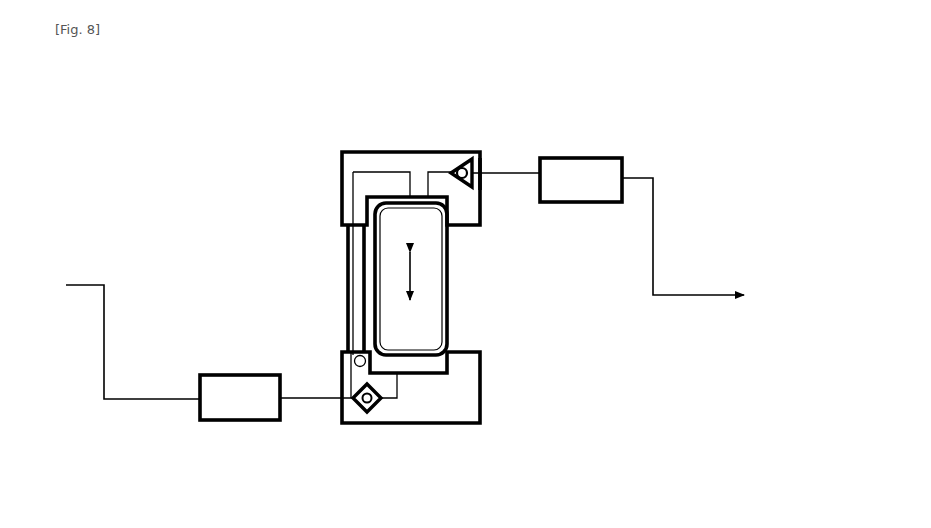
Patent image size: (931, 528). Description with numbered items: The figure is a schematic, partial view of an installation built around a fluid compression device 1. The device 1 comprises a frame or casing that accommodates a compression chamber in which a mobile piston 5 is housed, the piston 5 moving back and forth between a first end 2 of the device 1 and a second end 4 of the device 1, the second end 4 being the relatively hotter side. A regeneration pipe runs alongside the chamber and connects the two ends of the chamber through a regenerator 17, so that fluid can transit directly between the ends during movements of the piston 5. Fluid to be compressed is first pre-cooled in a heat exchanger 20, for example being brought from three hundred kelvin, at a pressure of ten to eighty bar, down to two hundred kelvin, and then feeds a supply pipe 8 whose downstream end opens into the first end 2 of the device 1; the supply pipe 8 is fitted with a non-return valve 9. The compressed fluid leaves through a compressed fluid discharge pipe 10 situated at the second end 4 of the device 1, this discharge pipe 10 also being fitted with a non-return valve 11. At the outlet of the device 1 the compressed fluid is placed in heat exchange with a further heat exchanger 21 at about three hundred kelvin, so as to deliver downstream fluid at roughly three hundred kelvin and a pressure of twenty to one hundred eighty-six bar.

The fluid compression device 1 is at (405, 293).
The first end 2 is at (460, 395).
The second end 4 is at (432, 150).
The mobile piston 5 is at (402, 238).
The supply pipe 8 is at (386, 400).
The non-return valve 9 is at (348, 405).
The compressed fluid discharge pipe 10 is at (441, 172).
The non-return valve 11 is at (486, 156).
The regenerator 17 is at (355, 248).
The heat exchanger 20 is at (232, 388).
The heat exchanger 21 is at (612, 165).